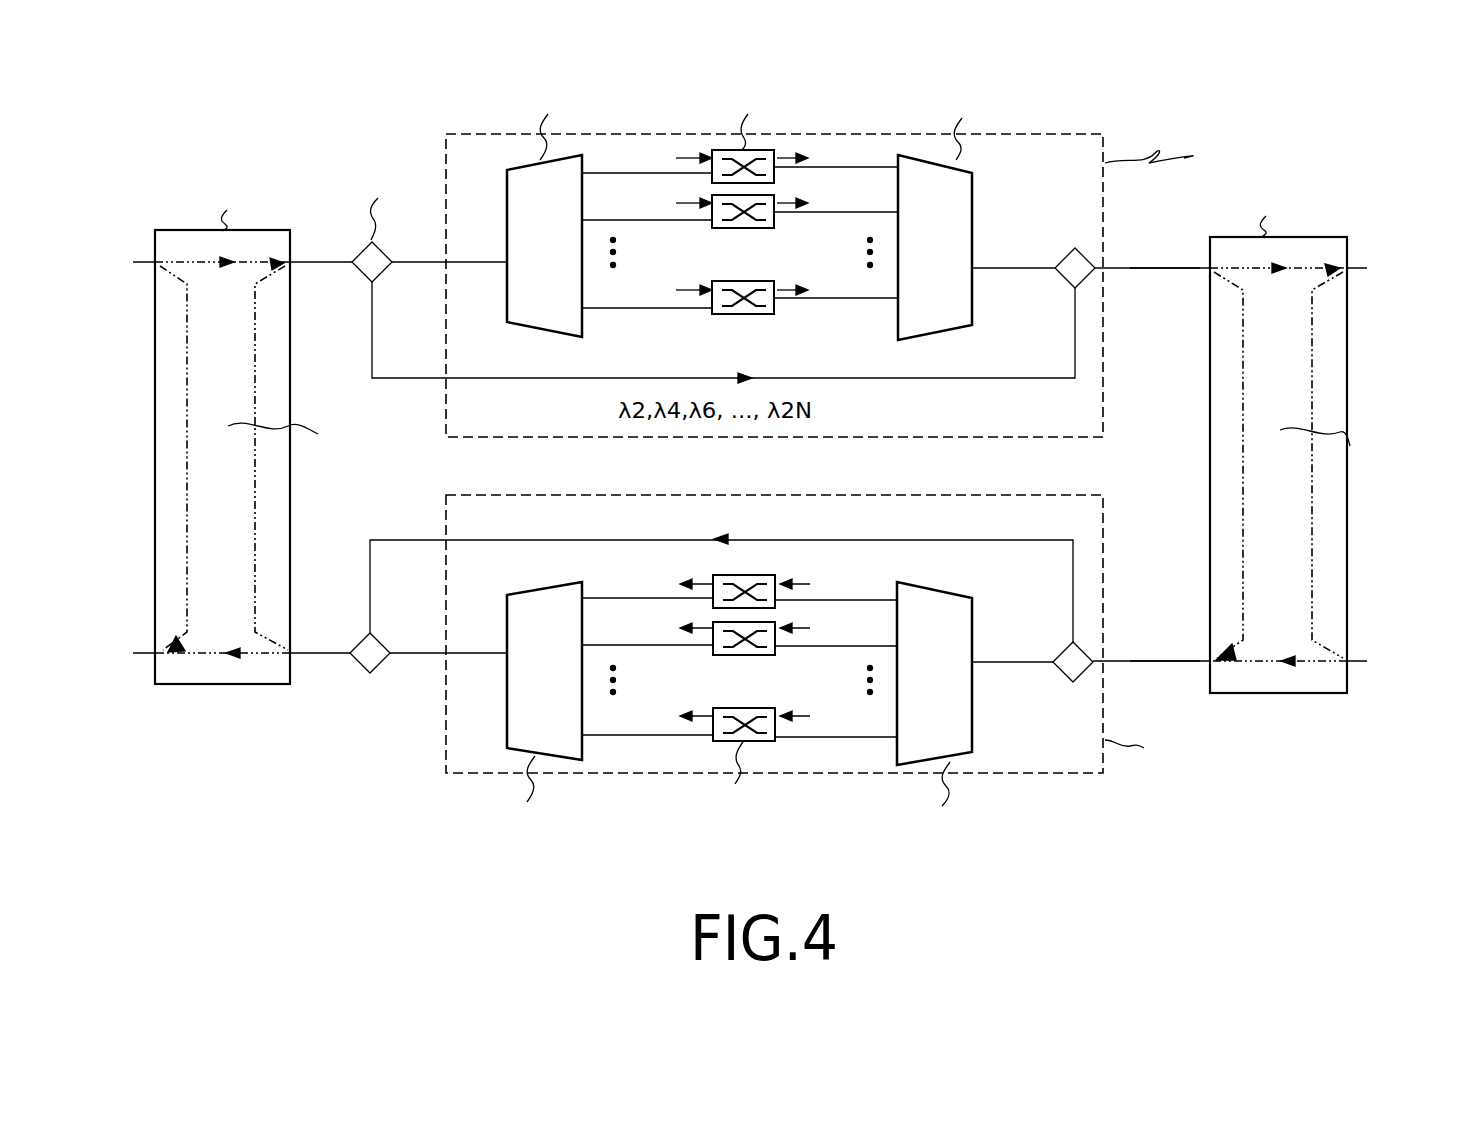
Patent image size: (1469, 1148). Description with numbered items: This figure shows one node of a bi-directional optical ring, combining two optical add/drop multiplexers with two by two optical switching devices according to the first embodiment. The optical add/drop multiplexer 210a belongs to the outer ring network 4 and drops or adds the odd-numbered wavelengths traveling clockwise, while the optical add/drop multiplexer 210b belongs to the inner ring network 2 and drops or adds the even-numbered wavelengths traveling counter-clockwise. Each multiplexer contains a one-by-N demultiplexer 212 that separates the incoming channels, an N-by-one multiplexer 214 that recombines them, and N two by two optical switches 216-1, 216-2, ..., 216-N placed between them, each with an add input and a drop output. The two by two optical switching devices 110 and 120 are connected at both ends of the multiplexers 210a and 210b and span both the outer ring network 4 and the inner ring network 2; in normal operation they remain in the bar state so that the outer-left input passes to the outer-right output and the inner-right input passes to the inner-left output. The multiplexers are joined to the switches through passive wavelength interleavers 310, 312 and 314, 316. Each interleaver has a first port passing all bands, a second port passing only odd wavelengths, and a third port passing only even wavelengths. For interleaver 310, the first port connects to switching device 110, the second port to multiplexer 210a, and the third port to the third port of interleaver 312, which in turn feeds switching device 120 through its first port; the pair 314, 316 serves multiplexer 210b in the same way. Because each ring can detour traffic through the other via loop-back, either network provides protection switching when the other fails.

The 2×2 optical switching device 110 is at (205, 685).
The 2×2 optical switching device 120 is at (1275, 694).
The optical add/drop multiplexer 210a is at (1105, 397).
The optical add/drop multiplexer 210b is at (1105, 528).
The 1×N demultiplexer 212 is at (538, 338).
The N×1 multiplexer 214 is at (928, 340).
The 2×2 optical switch 216-1 is at (775, 150).
The 2×2 optical switch 216-2 is at (778, 228).
The 2×2 optical switch 216-N is at (778, 315).
The wavelength interleaver 310 is at (366, 284).
The wavelength interleaver 312 is at (1074, 246).
The wavelength interleaver 314 is at (372, 675).
The wavelength interleaver 316 is at (1075, 684).
The inner ring network 2 is at (1182, 660).
The outer ring network 4 is at (1165, 272).